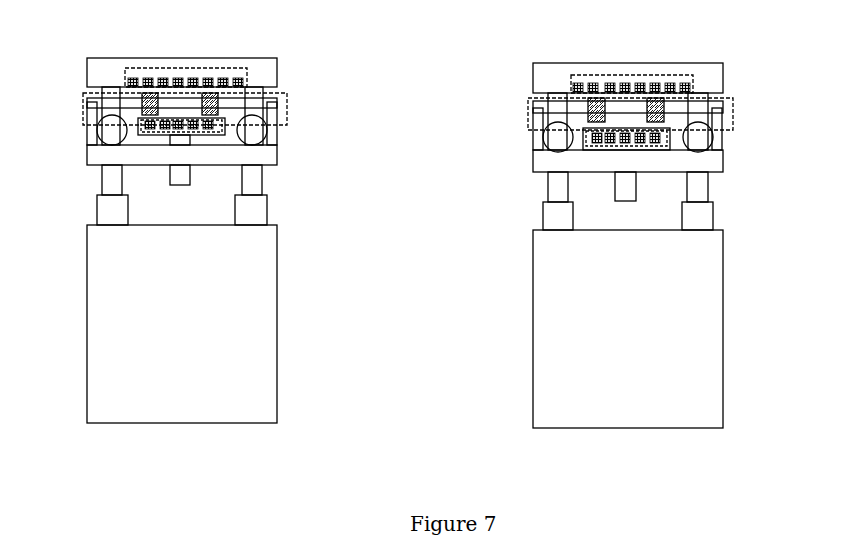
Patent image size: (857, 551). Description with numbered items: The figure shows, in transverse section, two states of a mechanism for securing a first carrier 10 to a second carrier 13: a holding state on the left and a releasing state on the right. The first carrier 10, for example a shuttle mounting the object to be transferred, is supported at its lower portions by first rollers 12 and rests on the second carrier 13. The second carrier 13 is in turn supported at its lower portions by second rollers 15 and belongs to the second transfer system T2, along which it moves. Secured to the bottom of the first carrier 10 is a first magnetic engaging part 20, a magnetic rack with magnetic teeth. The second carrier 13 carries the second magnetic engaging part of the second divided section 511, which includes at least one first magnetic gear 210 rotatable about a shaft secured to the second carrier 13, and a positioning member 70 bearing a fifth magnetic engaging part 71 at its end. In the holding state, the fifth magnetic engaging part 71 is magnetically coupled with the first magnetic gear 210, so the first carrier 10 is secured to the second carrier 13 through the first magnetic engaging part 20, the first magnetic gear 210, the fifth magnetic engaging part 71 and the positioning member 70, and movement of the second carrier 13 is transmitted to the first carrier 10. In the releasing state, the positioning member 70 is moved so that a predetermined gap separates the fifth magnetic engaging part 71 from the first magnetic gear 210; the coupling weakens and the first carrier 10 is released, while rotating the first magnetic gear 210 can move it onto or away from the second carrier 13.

The first carrier 10 is at (97, 66).
The first magnetic engaging part 20 is at (223, 84).
The first magnetic gear 210 is at (145, 92).
The second magnetic engaging part of the second divided section 511 is at (283, 112).
The first roller 12 is at (118, 134).
The second carrier 13 is at (262, 155).
The fifth magnetic engaging part 71 is at (198, 127).
The positioning member 70 is at (173, 180).
The second roller 15 is at (115, 207).
The second transfer system T2 is at (253, 367).